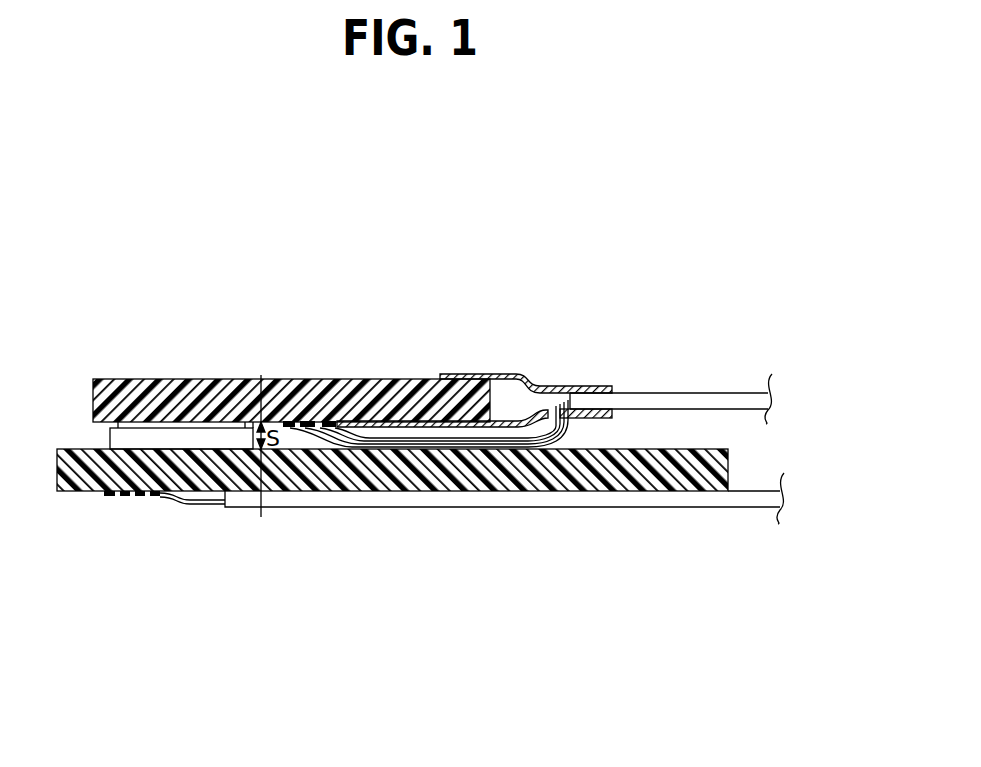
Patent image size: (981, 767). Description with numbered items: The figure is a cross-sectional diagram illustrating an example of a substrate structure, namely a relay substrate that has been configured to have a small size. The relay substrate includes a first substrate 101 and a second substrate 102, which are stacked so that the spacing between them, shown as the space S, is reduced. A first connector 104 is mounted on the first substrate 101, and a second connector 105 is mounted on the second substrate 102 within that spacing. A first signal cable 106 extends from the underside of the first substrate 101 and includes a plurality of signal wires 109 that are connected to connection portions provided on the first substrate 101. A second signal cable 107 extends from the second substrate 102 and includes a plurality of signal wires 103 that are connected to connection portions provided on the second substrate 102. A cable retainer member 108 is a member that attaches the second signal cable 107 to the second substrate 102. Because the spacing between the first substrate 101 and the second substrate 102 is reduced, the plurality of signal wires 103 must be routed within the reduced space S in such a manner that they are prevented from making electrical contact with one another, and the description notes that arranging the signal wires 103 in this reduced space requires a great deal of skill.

The first substrate 101 is at (302, 483).
The second substrate 102 is at (302, 391).
The signal wires 103 is at (423, 424).
The first connector 104 is at (203, 500).
The second connector 105 is at (186, 425).
The first signal cable 106 is at (748, 500).
The second signal cable 107 is at (746, 398).
The cable retainer member 108 is at (527, 381).
The signal wires 109 is at (192, 497).